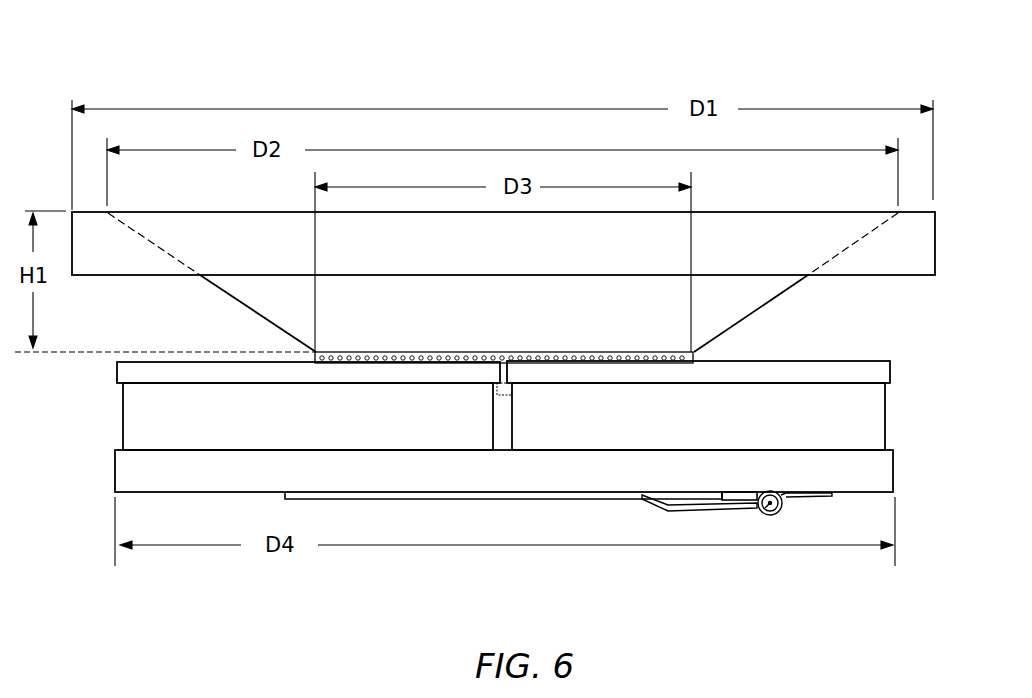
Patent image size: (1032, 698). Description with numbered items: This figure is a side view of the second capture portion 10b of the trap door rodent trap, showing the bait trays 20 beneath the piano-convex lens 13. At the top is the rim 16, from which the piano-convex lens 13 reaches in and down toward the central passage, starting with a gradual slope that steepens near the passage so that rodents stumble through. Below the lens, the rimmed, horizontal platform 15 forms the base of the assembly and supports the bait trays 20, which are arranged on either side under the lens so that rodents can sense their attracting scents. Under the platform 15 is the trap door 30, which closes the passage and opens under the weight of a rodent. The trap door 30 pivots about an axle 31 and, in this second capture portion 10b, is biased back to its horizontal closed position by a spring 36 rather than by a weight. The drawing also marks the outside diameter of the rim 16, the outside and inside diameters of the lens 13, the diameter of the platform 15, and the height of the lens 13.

The second capture portion 10b is at (148, 72).
The rim 16 is at (119, 259).
The piano-convex lens 13 is at (476, 324).
The bait trays 20 is at (214, 432).
The rimmed, horizontal platform 15 is at (208, 480).
The trap door 30 is at (377, 510).
The spring 36 is at (678, 510).
The axle 31 is at (767, 513).